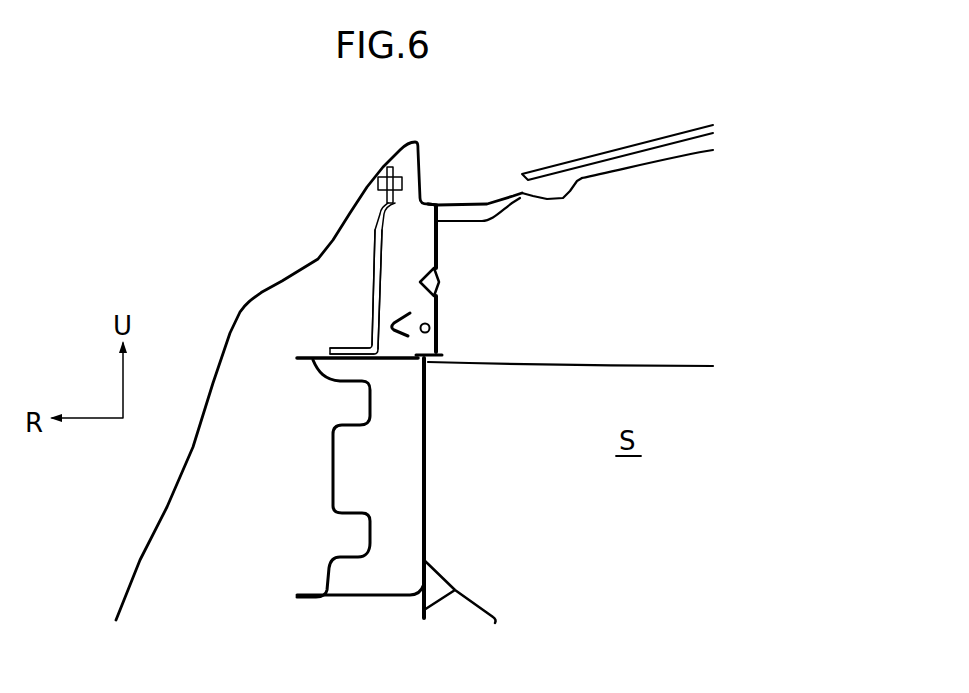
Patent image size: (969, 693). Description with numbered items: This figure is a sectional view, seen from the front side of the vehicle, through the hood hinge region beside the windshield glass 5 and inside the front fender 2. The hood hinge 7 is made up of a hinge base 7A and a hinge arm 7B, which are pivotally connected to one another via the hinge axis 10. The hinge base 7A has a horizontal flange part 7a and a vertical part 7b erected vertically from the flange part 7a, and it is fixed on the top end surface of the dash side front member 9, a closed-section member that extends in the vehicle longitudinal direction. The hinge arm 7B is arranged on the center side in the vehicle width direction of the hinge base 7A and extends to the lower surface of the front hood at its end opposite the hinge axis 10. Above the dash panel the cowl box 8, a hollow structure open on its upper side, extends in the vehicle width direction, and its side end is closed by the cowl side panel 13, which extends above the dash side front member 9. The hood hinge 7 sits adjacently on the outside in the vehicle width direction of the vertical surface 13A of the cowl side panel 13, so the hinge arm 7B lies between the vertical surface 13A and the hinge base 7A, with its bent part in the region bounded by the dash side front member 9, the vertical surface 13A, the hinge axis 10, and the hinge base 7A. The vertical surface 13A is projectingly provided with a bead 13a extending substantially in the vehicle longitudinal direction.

The front fender 2 is at (224, 342).
The windshield glass 5 is at (612, 151).
The hood hinge 7 is at (366, 232).
The hinge base 7A is at (364, 260).
The hinge arm 7B is at (426, 199).
The flange part 7a is at (343, 345).
The vertical part 7b is at (370, 291).
The cowl box 8 is at (627, 364).
The dash side front member 9 is at (331, 492).
The hinge axis 10 is at (378, 184).
The cowl side panel 13 is at (435, 226).
The bead 13a is at (420, 271).
The vertical surface 13A is at (430, 329).